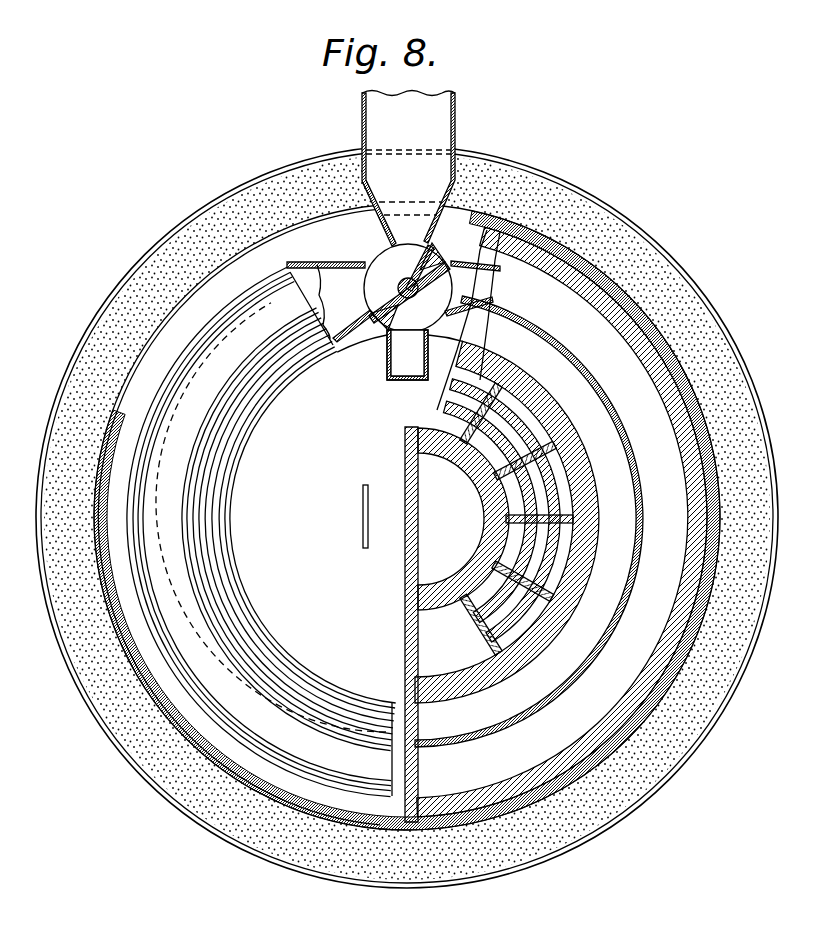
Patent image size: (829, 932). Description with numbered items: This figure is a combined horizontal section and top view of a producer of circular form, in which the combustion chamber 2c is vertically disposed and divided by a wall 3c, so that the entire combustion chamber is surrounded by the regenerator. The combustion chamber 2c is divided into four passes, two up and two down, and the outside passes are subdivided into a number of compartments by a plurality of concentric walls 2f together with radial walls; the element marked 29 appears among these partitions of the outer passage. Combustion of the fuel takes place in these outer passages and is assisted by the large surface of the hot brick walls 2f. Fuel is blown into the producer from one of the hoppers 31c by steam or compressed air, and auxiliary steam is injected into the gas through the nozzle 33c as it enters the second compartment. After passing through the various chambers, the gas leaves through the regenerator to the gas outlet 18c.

The hopper 31c is at (116, 294).
The gas outlet 18c is at (457, 273).
The combustion chamber 2c is at (600, 489).
The concentric walls 2f is at (550, 564).
The radial partition 29 is at (548, 604).
The wall 3c is at (410, 557).
The nozzle 33c is at (364, 517).